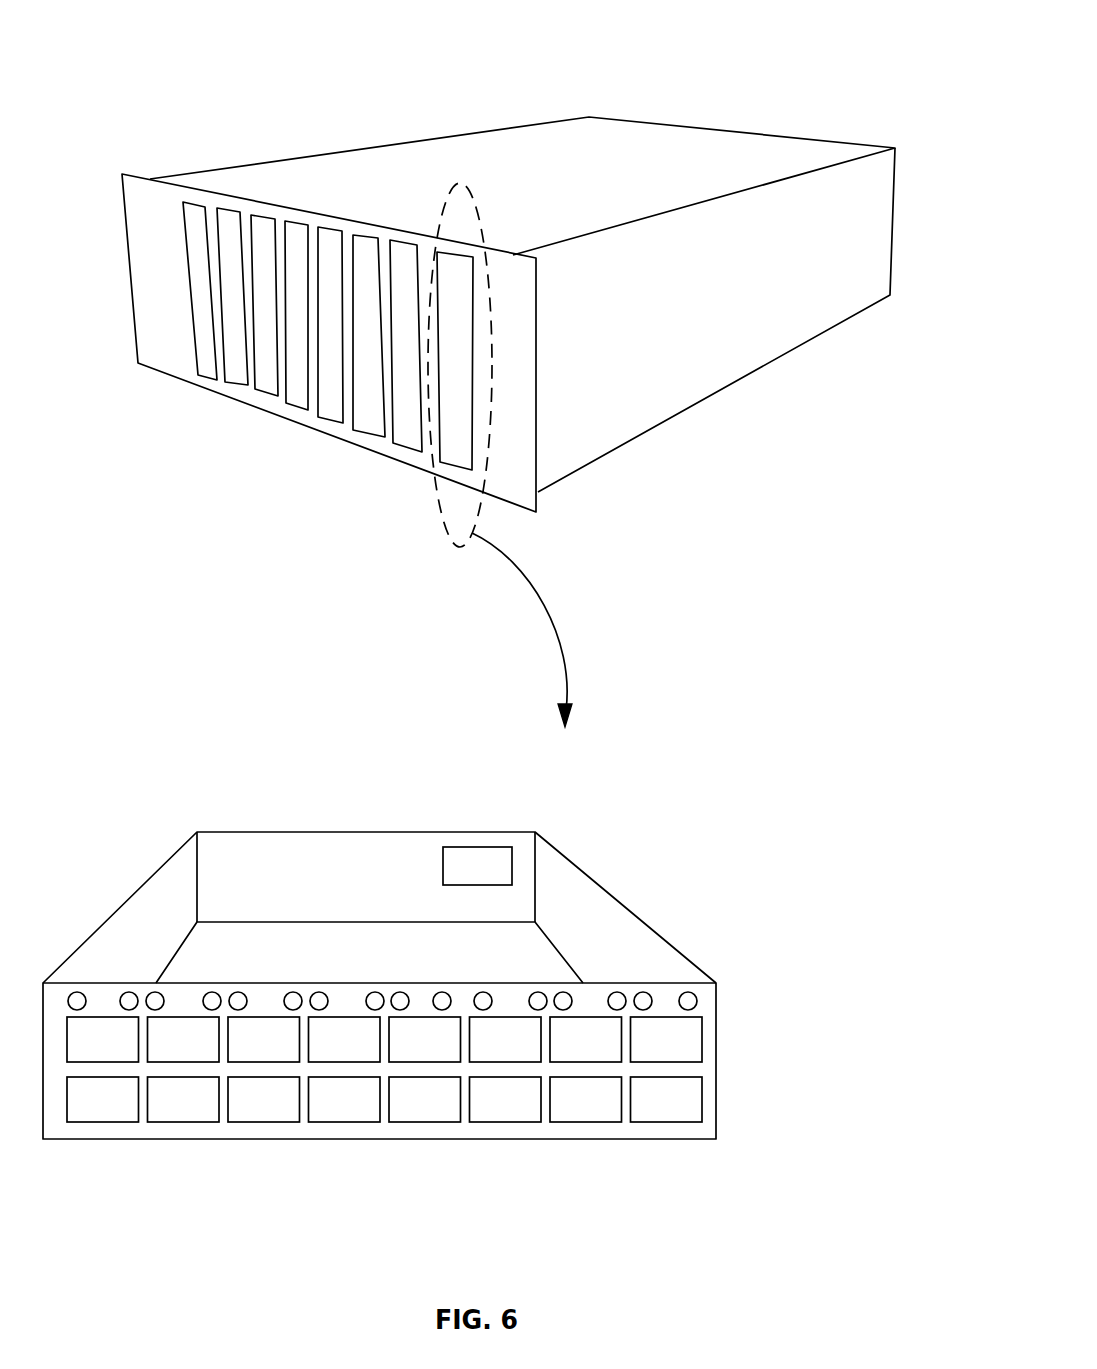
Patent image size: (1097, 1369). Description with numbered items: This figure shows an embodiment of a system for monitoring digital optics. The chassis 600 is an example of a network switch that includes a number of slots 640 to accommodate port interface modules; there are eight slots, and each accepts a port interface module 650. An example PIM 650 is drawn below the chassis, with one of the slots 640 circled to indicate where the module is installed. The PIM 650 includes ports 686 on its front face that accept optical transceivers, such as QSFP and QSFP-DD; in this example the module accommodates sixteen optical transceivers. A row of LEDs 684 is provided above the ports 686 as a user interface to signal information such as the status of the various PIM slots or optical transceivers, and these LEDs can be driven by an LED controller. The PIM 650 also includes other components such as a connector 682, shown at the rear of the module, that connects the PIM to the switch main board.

The chassis 600 is at (707, 93).
The slots 640 is at (443, 253).
The port interface module 650 is at (750, 859).
The connector 682 is at (482, 847).
The LEDs 684 is at (697, 1003).
The ports 686 is at (701, 1100).